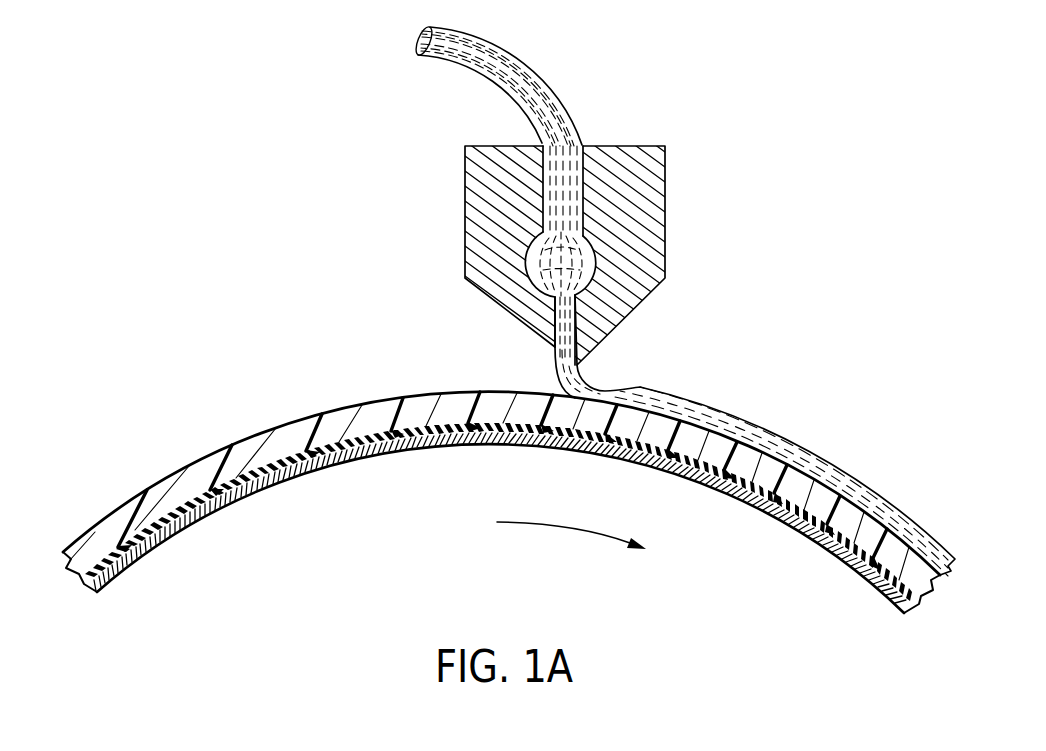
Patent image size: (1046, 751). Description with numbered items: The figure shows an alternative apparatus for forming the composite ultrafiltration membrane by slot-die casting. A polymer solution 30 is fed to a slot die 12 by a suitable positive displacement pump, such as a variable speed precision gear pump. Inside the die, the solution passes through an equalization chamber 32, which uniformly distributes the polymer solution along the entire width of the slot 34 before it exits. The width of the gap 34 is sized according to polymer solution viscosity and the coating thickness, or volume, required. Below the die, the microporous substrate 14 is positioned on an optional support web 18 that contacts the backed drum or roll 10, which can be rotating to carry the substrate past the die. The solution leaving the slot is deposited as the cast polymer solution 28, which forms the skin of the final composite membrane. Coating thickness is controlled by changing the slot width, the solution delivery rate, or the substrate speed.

The rotating drum 10 is at (540, 589).
The slot die 12 is at (667, 177).
The microporous substrate 14 is at (193, 463).
The support web 18 is at (157, 517).
The cast polymer solution 28 is at (856, 480).
The polymer solution 30 is at (526, 64).
The equalization chamber 32 is at (600, 258).
The slot 34 is at (576, 330).